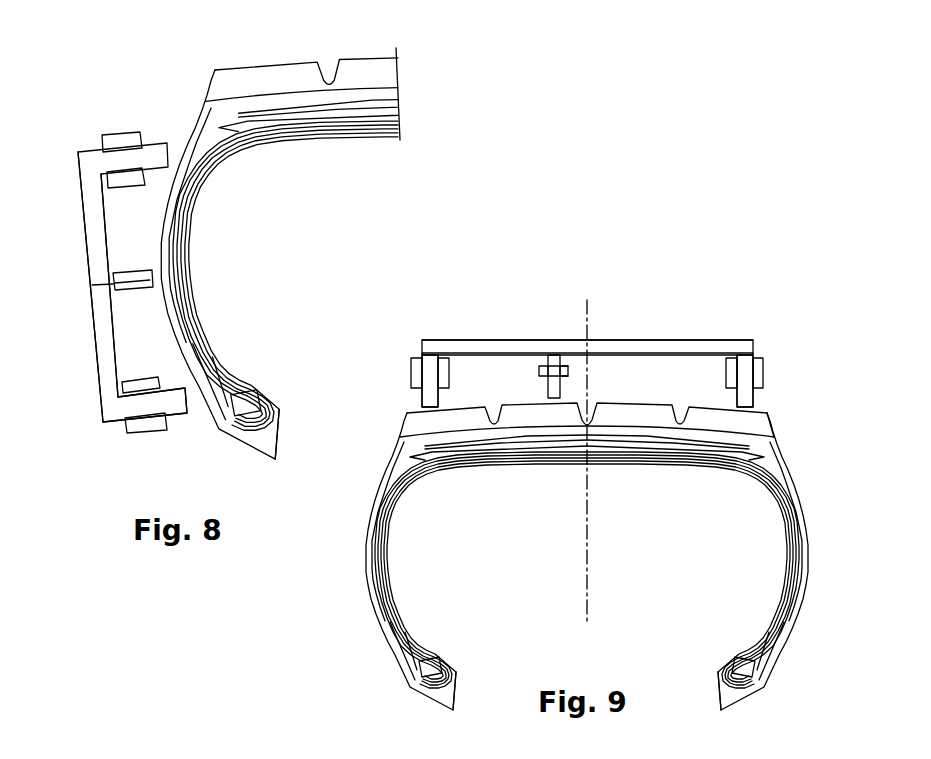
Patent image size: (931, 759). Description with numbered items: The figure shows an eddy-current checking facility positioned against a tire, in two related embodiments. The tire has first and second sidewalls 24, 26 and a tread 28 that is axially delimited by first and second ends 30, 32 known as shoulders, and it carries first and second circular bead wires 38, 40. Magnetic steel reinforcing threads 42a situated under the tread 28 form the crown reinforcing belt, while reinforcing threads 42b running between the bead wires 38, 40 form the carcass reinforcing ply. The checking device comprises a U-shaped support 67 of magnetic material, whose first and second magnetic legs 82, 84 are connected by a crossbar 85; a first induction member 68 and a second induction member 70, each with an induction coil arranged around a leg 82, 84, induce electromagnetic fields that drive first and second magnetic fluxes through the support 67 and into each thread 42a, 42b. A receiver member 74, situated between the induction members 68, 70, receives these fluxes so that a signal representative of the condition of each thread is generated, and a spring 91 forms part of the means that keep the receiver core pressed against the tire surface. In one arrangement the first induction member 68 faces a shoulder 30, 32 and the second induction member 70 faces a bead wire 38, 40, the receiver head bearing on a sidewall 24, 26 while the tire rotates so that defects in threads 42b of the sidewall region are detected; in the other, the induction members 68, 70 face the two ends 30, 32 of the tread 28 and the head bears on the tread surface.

In FIG. 8, the first sidewall 24 is at (150, 230).
In FIG. 9, the first sidewall 24 is at (364, 551).
In FIG. 9, the second sidewall 26 is at (818, 533).
In FIG. 9, the tread 28 is at (664, 466).
In FIG. 8, the first end 30 is at (177, 130).
In FIG. 9, the first end 30 is at (368, 505).
In FIG. 9, the second end 32 is at (802, 470).
In FIG. 8, the first circular bead wire 38 is at (243, 407).
In FIG. 9, the first circular bead wire 38 is at (423, 667).
In FIG. 9, the second circular bead wire 40 is at (740, 660).
In FIG. 9, the reinforcing threads 42a is at (620, 437).
In FIG. 8, the reinforcing threads 42b is at (177, 248).
In FIG. 9, the reinforcing threads 42b is at (386, 568).
In FIG. 8, the support 67 is at (88, 150).
In FIG. 9, the support 67 is at (502, 345).
In FIG. 8, the first induction member 68 is at (150, 440).
In FIG. 9, the first induction member 68 is at (392, 375).
In FIG. 8, the second induction member 70 is at (113, 118).
In FIG. 9, the second induction member 70 is at (775, 367).
In FIG. 8, the receiver member 74 is at (143, 297).
In FIG. 9, the receiver member 74 is at (576, 383).
In FIG. 8, the first magnetic leg 82 is at (118, 407).
In FIG. 9, the first magnetic leg 82 is at (430, 395).
In FIG. 8, the second magnetic leg 84 is at (155, 150).
In FIG. 9, the second magnetic leg 84 is at (748, 400).
In FIG. 8, the crossbar 85 is at (95, 225).
In FIG. 9, the crossbar 85 is at (686, 345).
In FIG. 8, the spring 91 is at (108, 290).
In FIG. 9, the spring 91 is at (554, 355).